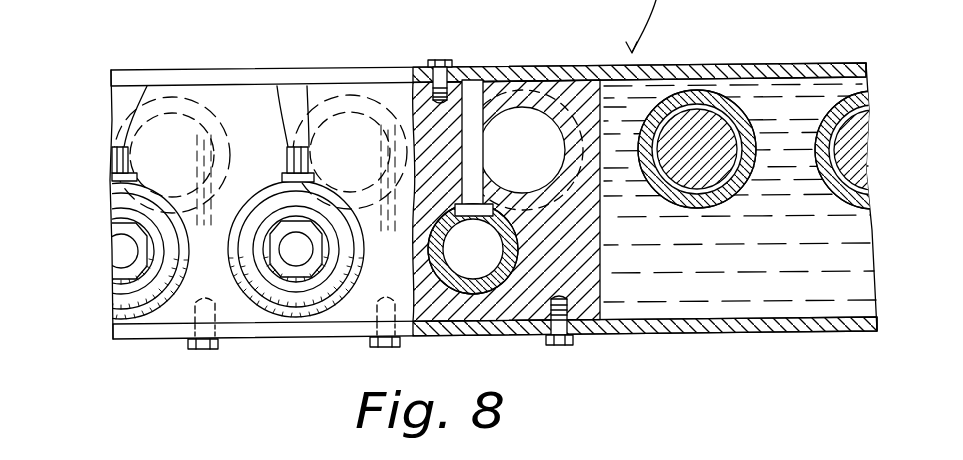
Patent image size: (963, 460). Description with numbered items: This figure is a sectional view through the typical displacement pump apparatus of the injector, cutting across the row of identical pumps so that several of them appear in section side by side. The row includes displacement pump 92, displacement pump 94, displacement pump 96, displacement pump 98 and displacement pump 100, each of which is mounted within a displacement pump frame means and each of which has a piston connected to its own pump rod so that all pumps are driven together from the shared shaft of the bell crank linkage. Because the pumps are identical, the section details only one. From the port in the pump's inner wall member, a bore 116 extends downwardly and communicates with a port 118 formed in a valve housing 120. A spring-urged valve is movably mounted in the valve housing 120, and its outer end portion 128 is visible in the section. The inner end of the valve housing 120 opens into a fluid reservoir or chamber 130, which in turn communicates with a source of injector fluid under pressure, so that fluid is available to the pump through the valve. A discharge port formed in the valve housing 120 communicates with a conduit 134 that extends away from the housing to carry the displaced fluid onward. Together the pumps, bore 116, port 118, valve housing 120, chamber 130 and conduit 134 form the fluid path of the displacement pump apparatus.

The displacement pump 92 is at (870, 97).
The displacement pump 94 is at (718, 100).
The displacement pump 96 is at (548, 80).
The displacement pump 98 is at (362, 95).
The displacement pump 100 is at (178, 90).
The bore 116 is at (150, 70).
The port 118 is at (478, 216).
The valve housing 120 is at (472, 296).
The outer end portion 128 is at (112, 258).
The fluid reservoir or chamber 130 is at (722, 287).
The conduit 134 is at (112, 166).